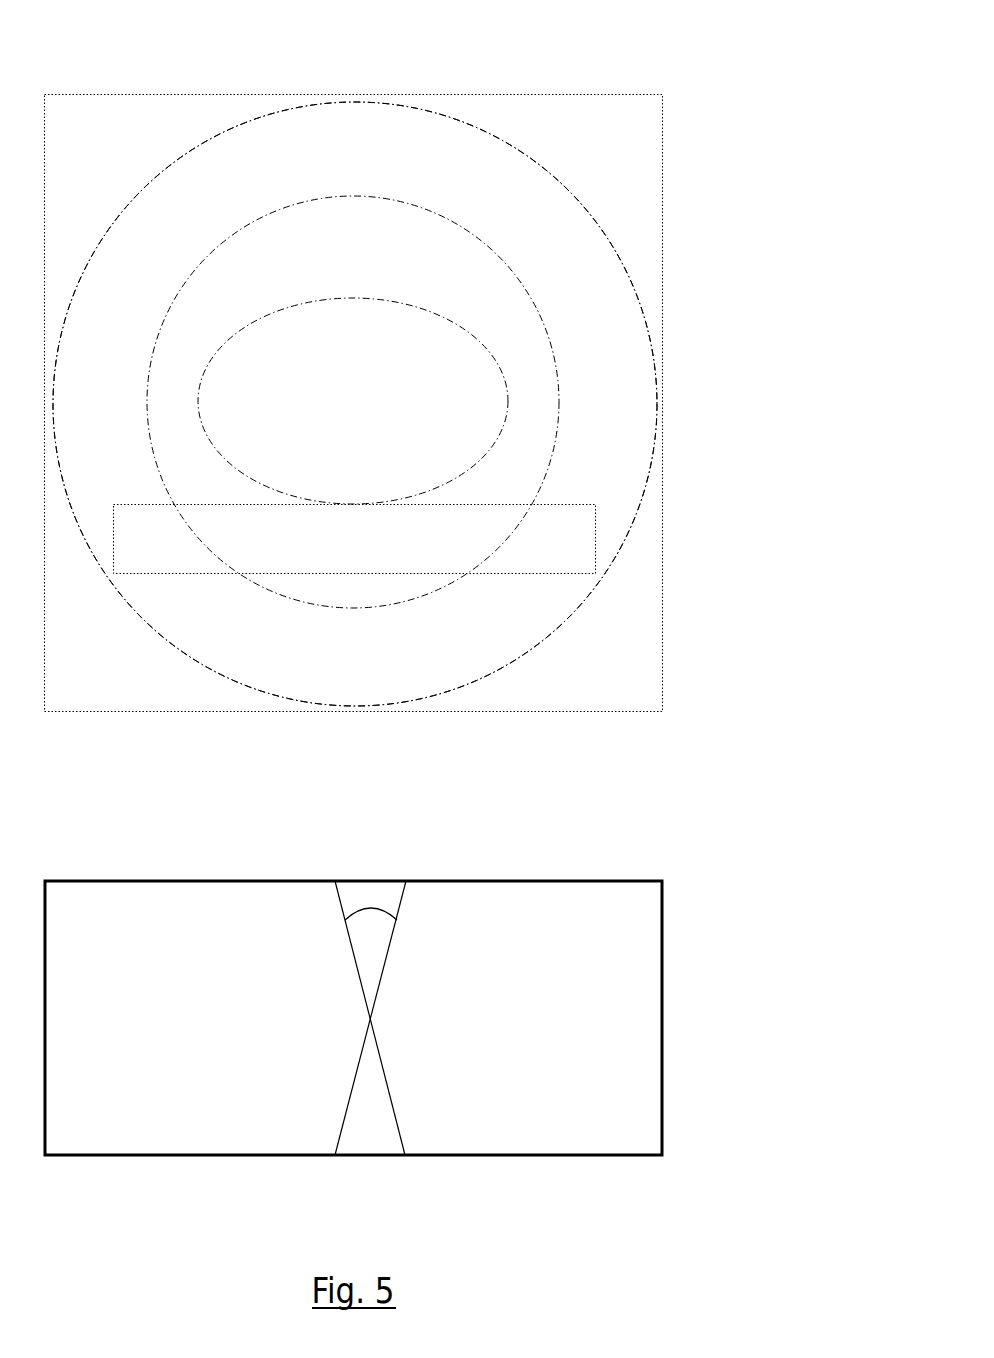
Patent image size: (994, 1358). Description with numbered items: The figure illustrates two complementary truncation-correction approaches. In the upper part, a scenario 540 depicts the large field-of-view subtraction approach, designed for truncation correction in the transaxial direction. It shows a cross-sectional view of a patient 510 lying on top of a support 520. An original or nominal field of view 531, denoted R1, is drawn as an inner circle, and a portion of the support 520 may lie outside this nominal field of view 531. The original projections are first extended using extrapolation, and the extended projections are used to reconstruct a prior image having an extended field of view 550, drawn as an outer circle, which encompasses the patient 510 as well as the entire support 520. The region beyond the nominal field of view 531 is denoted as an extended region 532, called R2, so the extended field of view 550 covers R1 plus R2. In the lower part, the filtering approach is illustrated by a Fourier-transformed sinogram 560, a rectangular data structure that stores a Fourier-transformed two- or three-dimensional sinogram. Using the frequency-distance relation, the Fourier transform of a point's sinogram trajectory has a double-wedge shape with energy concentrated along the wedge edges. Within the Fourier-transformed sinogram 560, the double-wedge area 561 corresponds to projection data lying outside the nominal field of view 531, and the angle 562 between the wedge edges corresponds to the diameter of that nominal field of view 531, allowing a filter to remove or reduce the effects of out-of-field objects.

The patient 510 is at (353, 401).
The support 520 is at (355, 539).
The nominal field of view 531 is at (447, 222).
The extended region 532 is at (593, 367).
The scenario 540 is at (354, 442).
The extended field of view 550 is at (637, 512).
The Fourier-transformed sinogram 560 is at (353, 1064).
The double-wedge area 561 is at (355, 1073).
The angle 562 is at (372, 908).